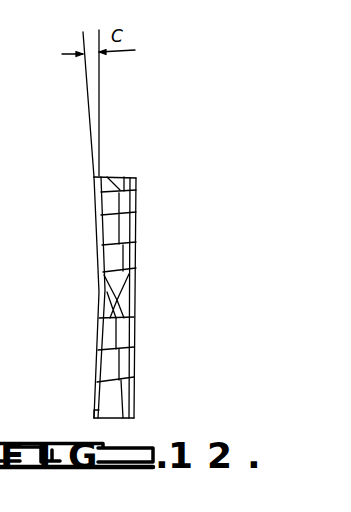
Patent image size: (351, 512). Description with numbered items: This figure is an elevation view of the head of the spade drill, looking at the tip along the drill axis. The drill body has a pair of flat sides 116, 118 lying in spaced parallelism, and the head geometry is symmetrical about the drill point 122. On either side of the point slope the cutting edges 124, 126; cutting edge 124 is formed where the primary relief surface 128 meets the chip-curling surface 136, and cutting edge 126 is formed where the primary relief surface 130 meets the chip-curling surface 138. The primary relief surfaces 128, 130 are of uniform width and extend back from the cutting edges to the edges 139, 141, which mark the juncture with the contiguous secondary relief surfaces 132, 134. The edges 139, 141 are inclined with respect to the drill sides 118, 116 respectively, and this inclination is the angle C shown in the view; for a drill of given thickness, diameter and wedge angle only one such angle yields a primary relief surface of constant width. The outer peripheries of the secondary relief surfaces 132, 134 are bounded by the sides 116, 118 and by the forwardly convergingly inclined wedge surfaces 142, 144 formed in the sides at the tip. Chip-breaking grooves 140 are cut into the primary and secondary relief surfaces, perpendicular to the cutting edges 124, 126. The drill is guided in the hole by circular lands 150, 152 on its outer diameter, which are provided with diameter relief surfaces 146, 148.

The flat side 116 is at (133, 293).
The flat side 118 is at (97, 332).
The drill point 122 is at (97, 308).
The cutting edge 124 is at (96, 228).
The cutting edge 126 is at (132, 362).
The primary relief surface 128 is at (138, 176).
The primary relief surface 130 is at (132, 400).
The secondary relief surface 132 is at (137, 195).
The secondary relief surface 134 is at (100, 398).
The chip-curling surface 136 is at (97, 259).
The chip-curling surface 138 is at (132, 332).
The edge 139 is at (135, 228).
The chip-breaking grooves 140 is at (136, 217).
The edge 141 is at (132, 343).
The wedge surface 142 is at (132, 275).
The wedge surface 144 is at (98, 293).
The diameter relief surface 146 is at (122, 175).
The diameter relief surface 148 is at (100, 419).
The circular land 150 is at (101, 175).
The circular land 152 is at (134, 419).